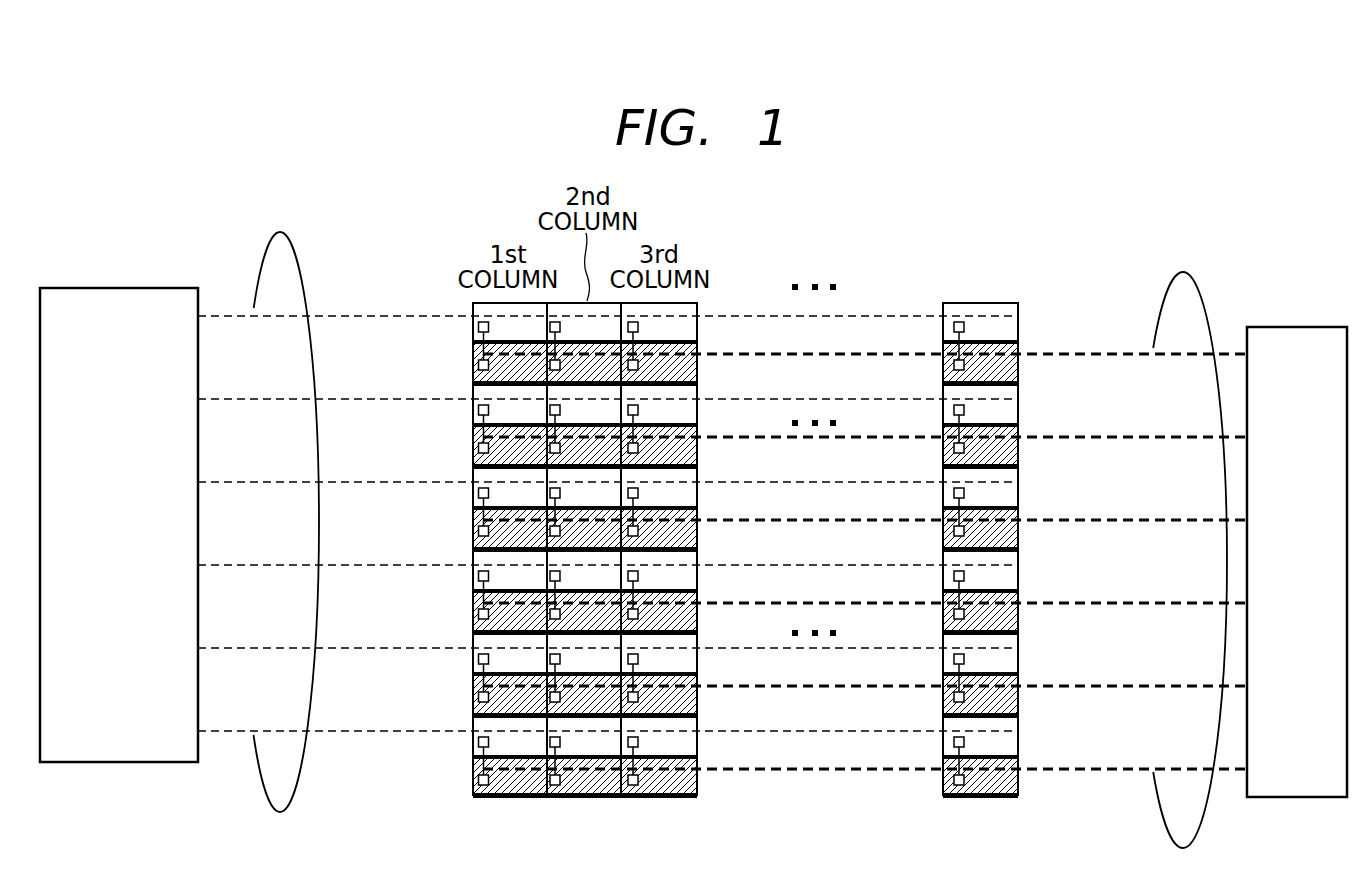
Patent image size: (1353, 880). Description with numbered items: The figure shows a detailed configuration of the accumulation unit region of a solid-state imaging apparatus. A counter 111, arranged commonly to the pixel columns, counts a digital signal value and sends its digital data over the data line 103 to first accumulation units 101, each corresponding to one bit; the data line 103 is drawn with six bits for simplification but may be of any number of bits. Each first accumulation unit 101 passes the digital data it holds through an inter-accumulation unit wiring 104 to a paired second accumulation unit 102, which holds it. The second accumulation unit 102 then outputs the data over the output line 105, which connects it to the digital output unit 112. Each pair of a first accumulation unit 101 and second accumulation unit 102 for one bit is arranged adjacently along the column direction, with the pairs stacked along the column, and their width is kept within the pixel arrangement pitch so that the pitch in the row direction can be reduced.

The first accumulation unit 101 is at (472, 719).
The second accumulation unit 102 is at (742, 794).
The data line 103 is at (279, 232).
The inter-accumulation unit wiring 104 is at (1045, 733).
The output line 105 is at (1182, 273).
The counter 111 is at (122, 288).
The digital output unit 112 is at (1299, 327).